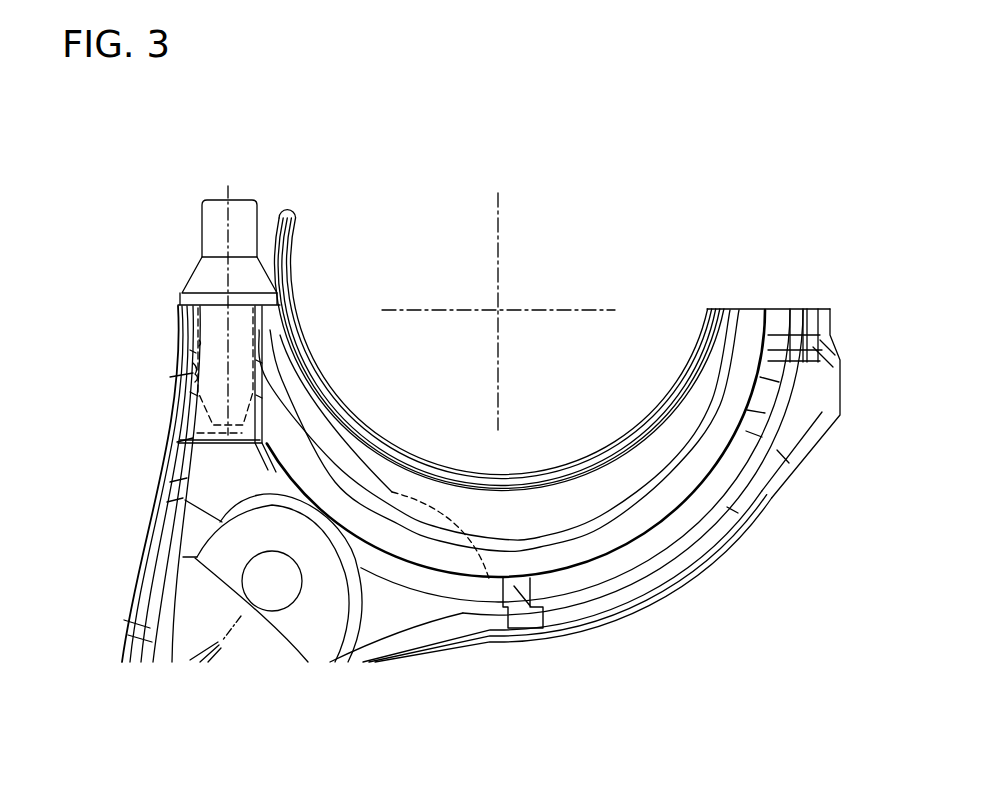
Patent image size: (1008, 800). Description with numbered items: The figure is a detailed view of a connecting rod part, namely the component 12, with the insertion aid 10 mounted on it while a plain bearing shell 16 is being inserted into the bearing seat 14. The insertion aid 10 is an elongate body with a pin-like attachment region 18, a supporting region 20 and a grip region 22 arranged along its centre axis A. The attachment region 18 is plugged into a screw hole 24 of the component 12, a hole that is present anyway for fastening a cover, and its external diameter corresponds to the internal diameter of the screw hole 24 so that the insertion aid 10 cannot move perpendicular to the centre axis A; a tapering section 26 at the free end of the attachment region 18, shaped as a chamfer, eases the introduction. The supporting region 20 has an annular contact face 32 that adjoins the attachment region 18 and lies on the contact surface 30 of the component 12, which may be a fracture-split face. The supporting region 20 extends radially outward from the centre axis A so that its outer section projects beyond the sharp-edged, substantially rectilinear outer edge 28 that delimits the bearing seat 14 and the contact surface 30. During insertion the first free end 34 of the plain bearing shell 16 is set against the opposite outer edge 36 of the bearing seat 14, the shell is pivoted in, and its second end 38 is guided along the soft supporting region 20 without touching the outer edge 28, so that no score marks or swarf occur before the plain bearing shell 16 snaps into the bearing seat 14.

The insertion aid 10 is at (178, 182).
The centre axis A is at (229, 190).
The component 12 is at (161, 503).
The bearing seat 14 is at (490, 584).
The plain bearing shell 16 is at (563, 470).
The attachment region 18 is at (171, 381).
The supporting region 20 is at (178, 289).
The grip region 22 is at (214, 232).
The screw hole 24 is at (171, 474).
The tapering section 26 is at (168, 414).
The outer edge 28 is at (298, 343).
The contact surface 30 is at (180, 308).
The contact face 32 is at (178, 300).
The first free end 34 is at (720, 306).
The outer edge 36 is at (735, 309).
The second end 38 is at (290, 223).